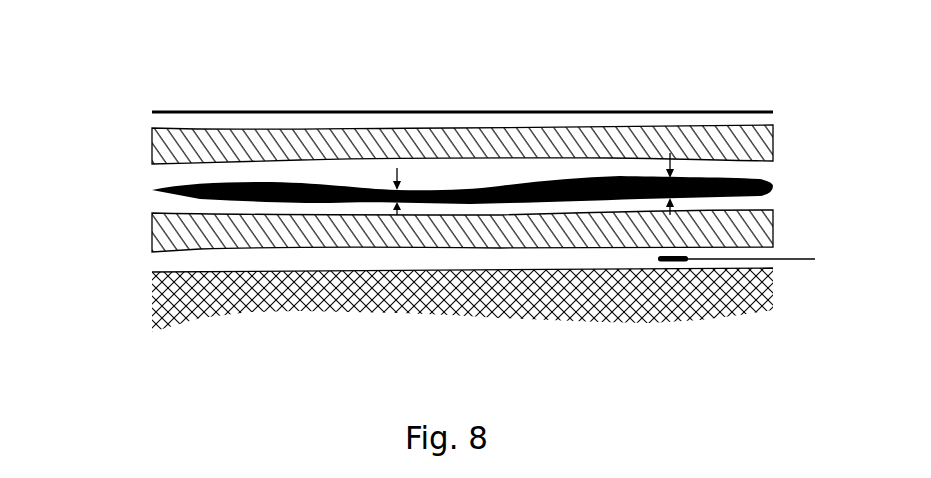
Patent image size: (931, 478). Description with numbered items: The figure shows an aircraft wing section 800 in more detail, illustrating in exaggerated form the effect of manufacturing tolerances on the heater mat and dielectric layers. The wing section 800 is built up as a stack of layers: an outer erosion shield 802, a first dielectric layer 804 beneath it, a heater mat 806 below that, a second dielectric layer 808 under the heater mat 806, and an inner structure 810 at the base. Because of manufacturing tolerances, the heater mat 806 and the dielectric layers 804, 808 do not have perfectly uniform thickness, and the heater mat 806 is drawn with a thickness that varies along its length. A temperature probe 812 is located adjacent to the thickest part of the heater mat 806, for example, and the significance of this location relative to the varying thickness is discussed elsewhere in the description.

The wing section 800 is at (667, 61).
The erosion shield 802 is at (152, 112).
The first dielectric layer 804 is at (152, 148).
The heater mat 806 is at (152, 191).
The second dielectric layer 808 is at (152, 237).
The inner structure 810 is at (152, 296).
The temperature probe 812 is at (660, 259).